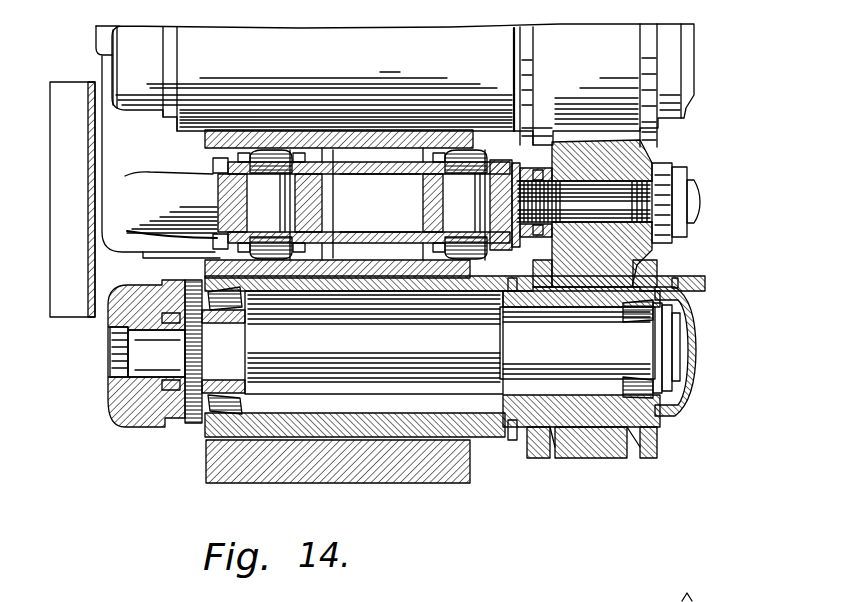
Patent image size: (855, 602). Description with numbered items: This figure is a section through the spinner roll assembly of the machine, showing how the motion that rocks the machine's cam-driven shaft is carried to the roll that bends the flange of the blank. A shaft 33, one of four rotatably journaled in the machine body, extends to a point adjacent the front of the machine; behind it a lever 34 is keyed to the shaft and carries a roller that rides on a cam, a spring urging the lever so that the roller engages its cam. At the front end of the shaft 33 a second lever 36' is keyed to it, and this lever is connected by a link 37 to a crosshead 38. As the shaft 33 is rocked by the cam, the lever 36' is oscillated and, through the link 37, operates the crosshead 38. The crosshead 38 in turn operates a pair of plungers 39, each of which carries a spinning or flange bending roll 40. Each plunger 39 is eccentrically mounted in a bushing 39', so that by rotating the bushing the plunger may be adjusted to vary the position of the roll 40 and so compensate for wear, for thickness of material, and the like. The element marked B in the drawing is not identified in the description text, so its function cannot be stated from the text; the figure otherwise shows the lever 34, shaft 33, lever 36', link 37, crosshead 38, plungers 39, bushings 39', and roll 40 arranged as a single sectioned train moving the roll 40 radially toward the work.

The lever 34 is at (126, 43).
The shaft 33 is at (165, 254).
The lever 36' is at (192, 175).
The link 37 is at (372, 172).
The crosshead 38 is at (640, 236).
The plunger 39 is at (599, 381).
The bushing 39' is at (455, 396).
The spinning or flange bending roll 40 is at (143, 412).
The plate B is at (84, 318).